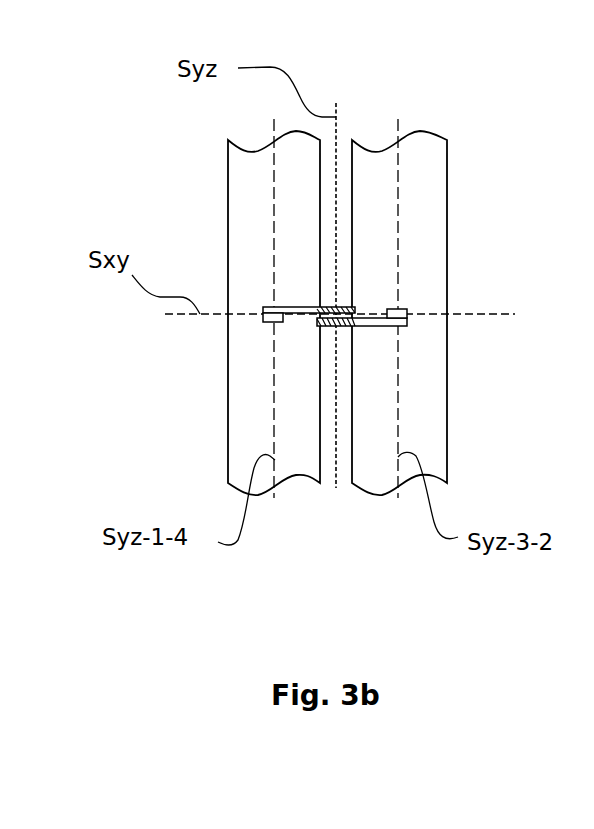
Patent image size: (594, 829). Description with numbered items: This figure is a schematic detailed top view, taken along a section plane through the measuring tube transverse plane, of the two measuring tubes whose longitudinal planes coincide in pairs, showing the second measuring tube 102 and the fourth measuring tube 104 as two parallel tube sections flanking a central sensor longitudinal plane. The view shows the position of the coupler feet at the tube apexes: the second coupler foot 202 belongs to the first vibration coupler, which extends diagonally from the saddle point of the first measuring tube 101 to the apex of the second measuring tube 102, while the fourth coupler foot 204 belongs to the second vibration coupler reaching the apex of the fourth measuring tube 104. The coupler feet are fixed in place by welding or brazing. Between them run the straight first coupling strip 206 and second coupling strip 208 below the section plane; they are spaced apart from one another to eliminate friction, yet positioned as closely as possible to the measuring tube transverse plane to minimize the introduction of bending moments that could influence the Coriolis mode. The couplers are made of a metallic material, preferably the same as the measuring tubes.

The first measuring tube 101 is at (342, 313).
The second measuring tube 102 is at (437, 430).
The fourth measuring tube 104 is at (237, 428).
The second coupler foot 202 is at (400, 309).
The fourth coupler foot 204 is at (278, 323).
The first coupling strip 206 is at (322, 327).
The second coupling strip 208 is at (342, 306).